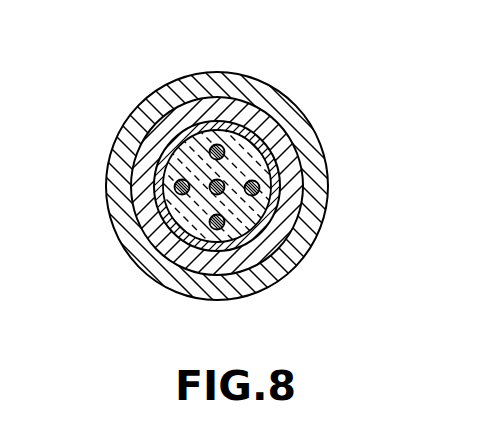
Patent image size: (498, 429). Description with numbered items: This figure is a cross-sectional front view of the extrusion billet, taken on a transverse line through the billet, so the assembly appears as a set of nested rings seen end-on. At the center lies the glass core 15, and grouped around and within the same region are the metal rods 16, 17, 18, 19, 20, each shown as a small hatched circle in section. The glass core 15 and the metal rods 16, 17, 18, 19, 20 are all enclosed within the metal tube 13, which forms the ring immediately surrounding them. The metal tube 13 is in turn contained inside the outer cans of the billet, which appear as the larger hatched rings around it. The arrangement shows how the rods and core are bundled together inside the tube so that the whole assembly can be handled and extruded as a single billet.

The metal tube 13 is at (272, 217).
The glass core 15 is at (204, 227).
The metal rod 16 is at (208, 182).
The metal rod 17 is at (224, 144).
The metal rod 18 is at (259, 188).
The metal rod 19 is at (247, 260).
The metal rod 20 is at (181, 196).